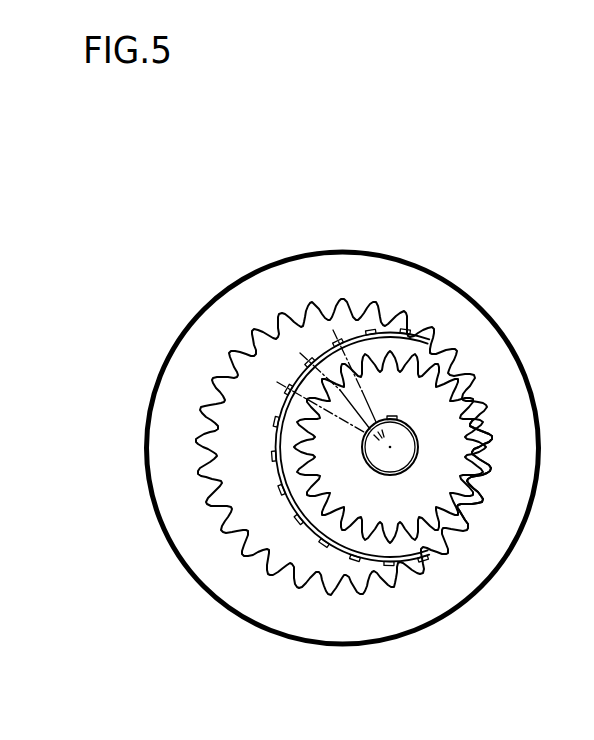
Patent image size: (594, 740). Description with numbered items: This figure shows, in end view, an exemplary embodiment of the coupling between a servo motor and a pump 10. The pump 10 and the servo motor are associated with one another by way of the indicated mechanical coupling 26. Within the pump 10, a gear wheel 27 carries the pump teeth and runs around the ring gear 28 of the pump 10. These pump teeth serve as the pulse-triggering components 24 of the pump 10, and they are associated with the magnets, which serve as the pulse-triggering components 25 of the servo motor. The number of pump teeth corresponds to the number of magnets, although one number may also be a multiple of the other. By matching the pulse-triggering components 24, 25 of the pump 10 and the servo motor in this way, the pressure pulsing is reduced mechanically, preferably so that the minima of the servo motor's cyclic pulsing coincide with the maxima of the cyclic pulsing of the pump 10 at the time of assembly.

The pump 10 is at (322, 232).
The pulse-triggering components of the pump 24 is at (466, 502).
The magnets 25 is at (277, 422).
The mechanical coupling 26 is at (362, 391).
The gear wheel 27 is at (428, 400).
The ring gear 28 is at (232, 580).